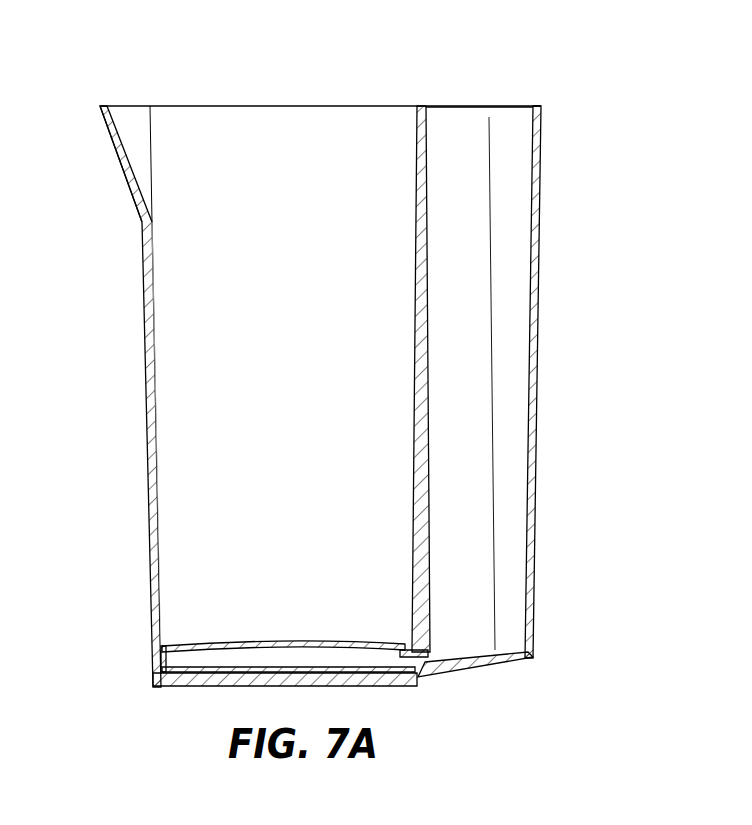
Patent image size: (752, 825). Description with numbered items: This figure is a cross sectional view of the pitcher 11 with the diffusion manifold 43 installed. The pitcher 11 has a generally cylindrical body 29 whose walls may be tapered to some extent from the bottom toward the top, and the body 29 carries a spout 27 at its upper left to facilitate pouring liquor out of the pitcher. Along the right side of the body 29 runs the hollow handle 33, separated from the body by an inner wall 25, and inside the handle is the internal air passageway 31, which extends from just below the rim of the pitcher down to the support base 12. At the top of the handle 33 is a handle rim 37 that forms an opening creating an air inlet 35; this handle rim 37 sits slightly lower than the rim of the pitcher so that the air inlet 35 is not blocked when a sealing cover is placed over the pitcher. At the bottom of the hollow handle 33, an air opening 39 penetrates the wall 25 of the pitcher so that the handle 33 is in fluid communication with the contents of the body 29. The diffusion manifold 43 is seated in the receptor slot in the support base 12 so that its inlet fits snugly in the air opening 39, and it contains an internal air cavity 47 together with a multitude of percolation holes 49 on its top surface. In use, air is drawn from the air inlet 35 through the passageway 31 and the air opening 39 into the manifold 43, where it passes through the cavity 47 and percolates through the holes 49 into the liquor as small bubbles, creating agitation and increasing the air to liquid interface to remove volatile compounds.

The pitcher 11 is at (148, 390).
The support base 12 is at (422, 685).
The inner partition wall 25 is at (425, 106).
The spout 27 is at (120, 161).
The body 29 is at (262, 497).
The internal air passageway 31 is at (490, 565).
The hollow handle 33 is at (535, 410).
The air inlet 35 is at (484, 96).
The handle rim 37 is at (538, 107).
The air opening 39 is at (500, 663).
The diffusion manifold 43 is at (240, 642).
The internal air cavity 47 is at (195, 658).
The percolation holes 49 is at (297, 642).